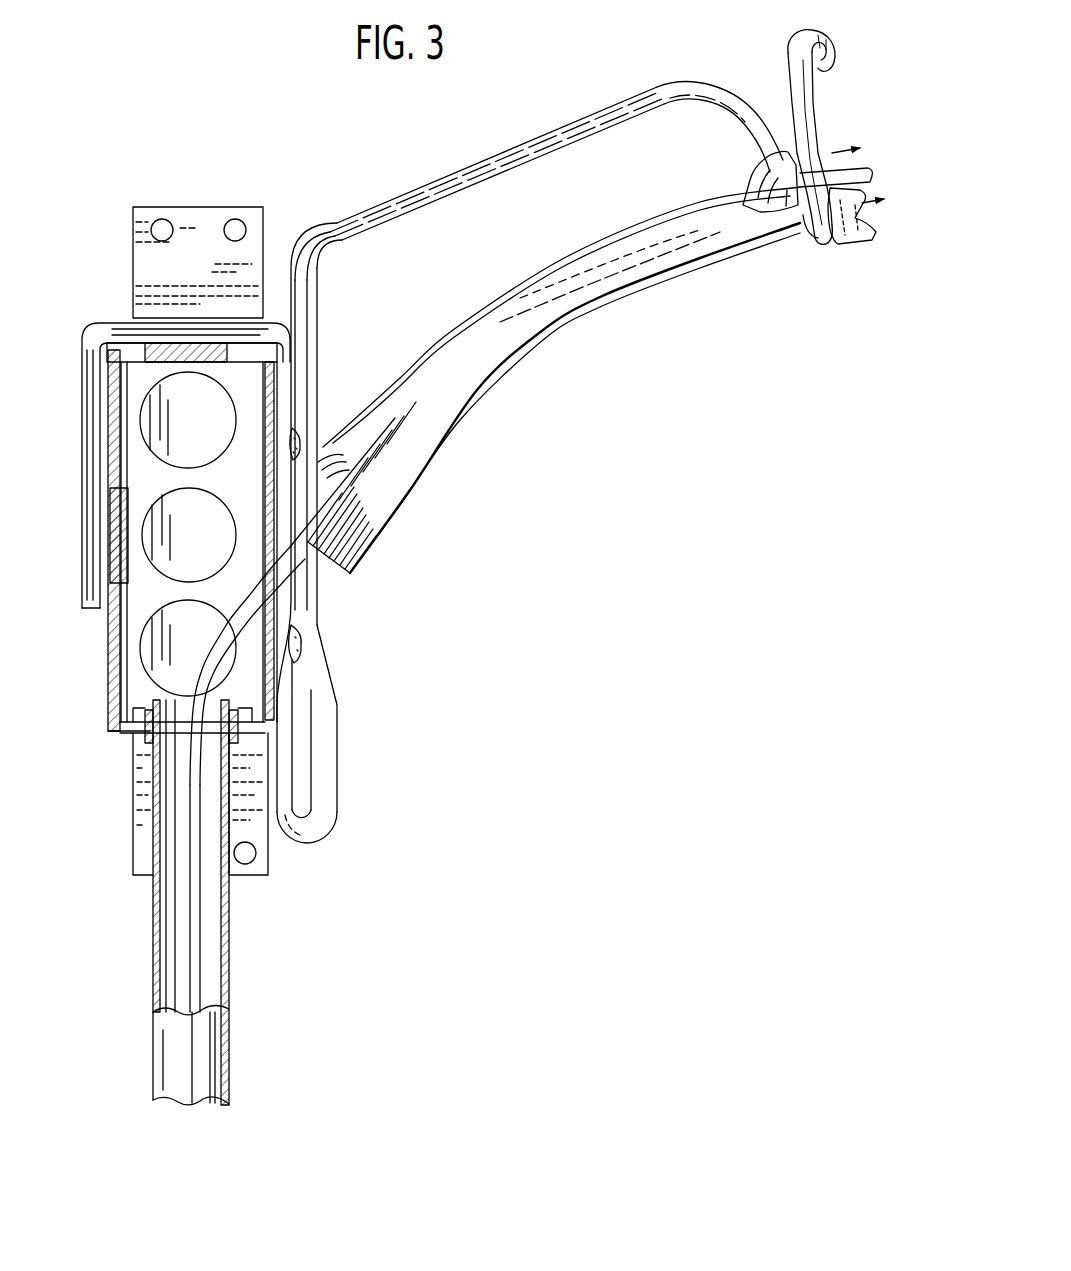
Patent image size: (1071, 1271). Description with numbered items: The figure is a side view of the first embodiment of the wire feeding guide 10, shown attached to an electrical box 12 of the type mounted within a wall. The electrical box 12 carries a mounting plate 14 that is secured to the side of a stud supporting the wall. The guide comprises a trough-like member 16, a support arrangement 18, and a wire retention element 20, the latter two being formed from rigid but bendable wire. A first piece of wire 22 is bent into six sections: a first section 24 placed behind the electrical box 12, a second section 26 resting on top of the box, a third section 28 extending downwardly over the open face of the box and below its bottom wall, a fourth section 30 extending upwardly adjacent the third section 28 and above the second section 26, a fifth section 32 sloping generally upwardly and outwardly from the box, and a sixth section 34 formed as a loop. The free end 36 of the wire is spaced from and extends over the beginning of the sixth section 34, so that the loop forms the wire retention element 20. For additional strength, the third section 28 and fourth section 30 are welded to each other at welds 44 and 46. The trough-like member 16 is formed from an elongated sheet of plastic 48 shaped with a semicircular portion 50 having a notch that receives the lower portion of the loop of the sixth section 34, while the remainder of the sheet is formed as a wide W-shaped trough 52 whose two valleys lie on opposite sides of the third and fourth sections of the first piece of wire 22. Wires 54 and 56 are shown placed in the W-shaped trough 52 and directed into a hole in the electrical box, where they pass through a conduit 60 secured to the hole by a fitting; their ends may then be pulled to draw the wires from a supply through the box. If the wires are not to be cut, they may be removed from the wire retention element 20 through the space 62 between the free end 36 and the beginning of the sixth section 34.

The wire feeding guide 10 is at (545, 380).
The electrical box 12 is at (110, 668).
The mounting plate 14 is at (266, 227).
The trough-like member 16 is at (515, 362).
The support arrangement 18 is at (330, 640).
The wire retention element 20 is at (530, 433).
The first piece of wire 22 is at (322, 366).
The first section 24 is at (82, 477).
The second section 26 is at (120, 323).
The third section 28 is at (293, 755).
The fourth section 30 is at (315, 303).
The fifth section 32 is at (468, 180).
The sixth section 34 is at (750, 137).
The free end 36 is at (840, 60).
The weld 44 is at (300, 443).
The weld 46 is at (305, 648).
The elongated sheet of plastic 48 is at (620, 293).
The semicircular portion 50 is at (800, 243).
The W-shaped trough 52 is at (713, 253).
The wire 54 is at (297, 557).
The wire 56 is at (162, 600).
The conduit 60 is at (229, 990).
The space 62 is at (783, 108).